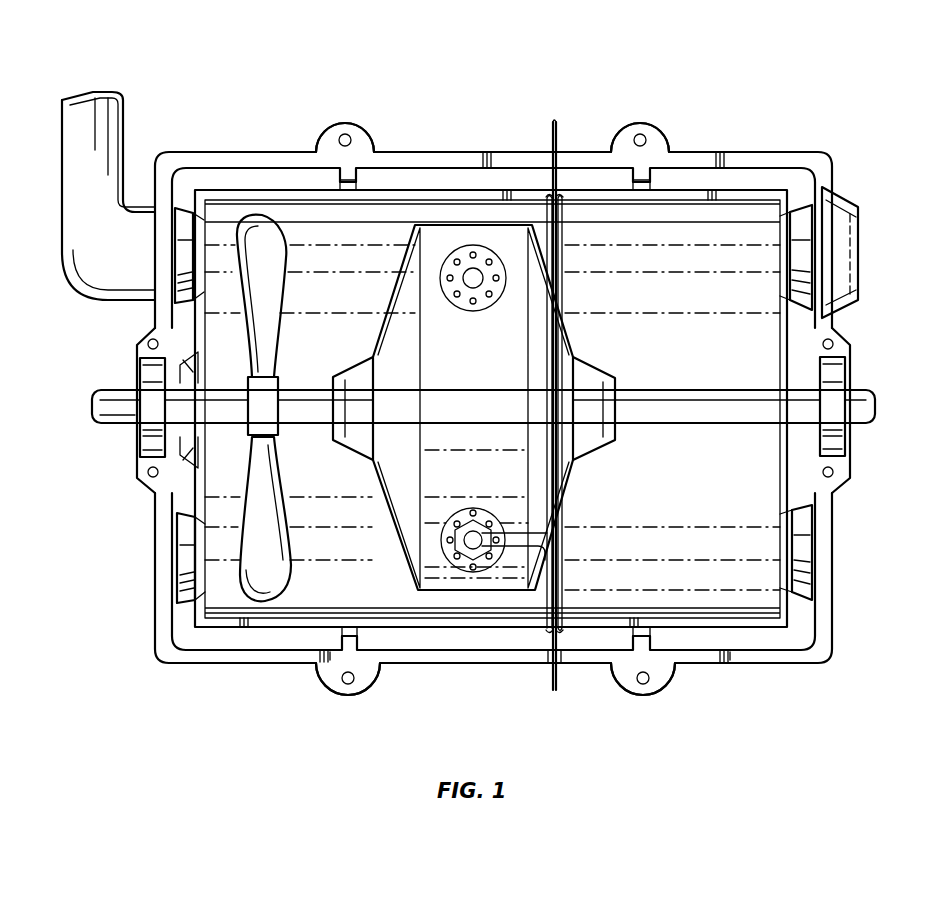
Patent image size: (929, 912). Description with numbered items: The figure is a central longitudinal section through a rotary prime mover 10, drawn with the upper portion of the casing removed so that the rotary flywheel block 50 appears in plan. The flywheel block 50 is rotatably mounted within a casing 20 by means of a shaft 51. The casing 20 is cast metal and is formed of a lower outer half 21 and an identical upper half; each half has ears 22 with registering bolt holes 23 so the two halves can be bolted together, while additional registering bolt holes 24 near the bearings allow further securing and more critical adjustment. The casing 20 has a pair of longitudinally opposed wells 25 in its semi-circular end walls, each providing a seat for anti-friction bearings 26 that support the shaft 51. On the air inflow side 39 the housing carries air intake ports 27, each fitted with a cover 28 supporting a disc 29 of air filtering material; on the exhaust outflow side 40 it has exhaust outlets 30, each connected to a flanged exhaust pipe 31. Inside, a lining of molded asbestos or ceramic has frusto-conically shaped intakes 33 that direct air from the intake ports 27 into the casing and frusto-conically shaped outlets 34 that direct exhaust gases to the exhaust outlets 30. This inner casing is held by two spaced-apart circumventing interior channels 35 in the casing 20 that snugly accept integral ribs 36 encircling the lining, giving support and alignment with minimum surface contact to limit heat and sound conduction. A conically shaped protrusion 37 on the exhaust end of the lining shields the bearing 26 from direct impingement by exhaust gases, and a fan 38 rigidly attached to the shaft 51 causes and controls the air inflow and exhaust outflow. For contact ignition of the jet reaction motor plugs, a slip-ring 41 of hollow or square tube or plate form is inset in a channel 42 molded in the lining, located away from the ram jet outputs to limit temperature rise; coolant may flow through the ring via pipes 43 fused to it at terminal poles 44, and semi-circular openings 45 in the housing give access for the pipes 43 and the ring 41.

The rotary prime mover 10 is at (757, 126).
The casing 20 is at (815, 636).
The lower outer half 21 is at (764, 158).
The ears 22 is at (337, 148).
The registering bolt holes 23 is at (344, 132).
The additional registering bolt holes 24 is at (147, 345).
The wells 25 is at (148, 440).
The anti-friction bearings 26 is at (140, 432).
The air intake ports 27 is at (803, 228).
The cover 28 is at (845, 195).
The disc of air filtering material 29 is at (860, 248).
The exhaust outlets 30 is at (160, 278).
The flanged exhaust pipe 31 is at (123, 122).
The frusto-conically shaped intakes 33 is at (808, 302).
The frusto-conically shaped outlets 34 is at (185, 308).
The interior channels 35 is at (352, 172).
The ribs 36 is at (378, 176).
The conically shaped protrusion 37 is at (183, 372).
The fan 38 is at (253, 230).
The air inflow side 39 is at (673, 300).
The exhaust outflow side 40 is at (338, 340).
The slip-ring 41 is at (557, 240).
The channel 42 is at (547, 198).
The pipes 43 is at (552, 130).
The terminal poles 44 is at (562, 205).
The semi-circular openings 45 is at (560, 196).
The rotary flywheel block 50 is at (487, 385).
The shaft 51 is at (96, 398).